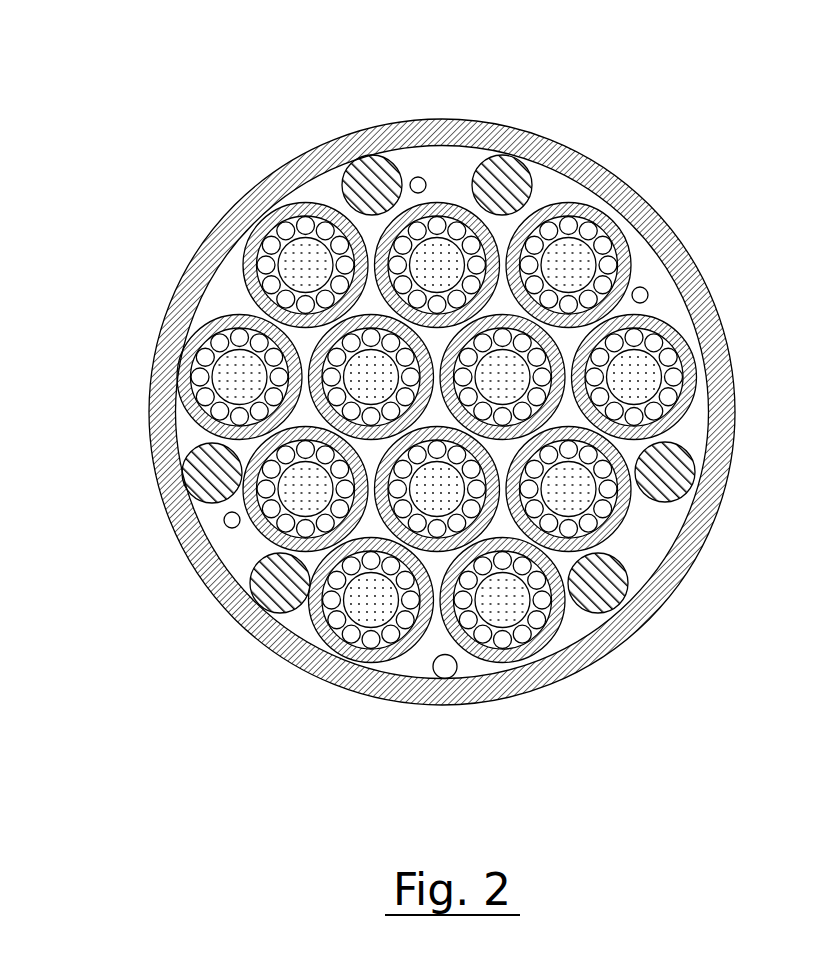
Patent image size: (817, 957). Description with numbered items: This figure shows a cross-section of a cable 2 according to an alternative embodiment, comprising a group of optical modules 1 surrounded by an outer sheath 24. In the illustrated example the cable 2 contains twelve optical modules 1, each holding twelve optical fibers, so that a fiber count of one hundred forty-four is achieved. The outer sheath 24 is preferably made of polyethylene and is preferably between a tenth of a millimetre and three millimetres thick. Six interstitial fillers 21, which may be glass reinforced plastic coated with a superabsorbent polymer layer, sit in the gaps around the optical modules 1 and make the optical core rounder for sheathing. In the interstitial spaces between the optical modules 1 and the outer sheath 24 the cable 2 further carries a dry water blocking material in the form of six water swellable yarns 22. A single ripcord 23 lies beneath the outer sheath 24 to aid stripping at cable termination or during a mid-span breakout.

The optical module 1 is at (452, 203).
The cable 2 is at (170, 145).
The interstitial filler 21 is at (523, 168).
The water swellable yarn 22 is at (418, 177).
The ripcord 23 is at (449, 678).
The outer sheath 24 is at (683, 248).